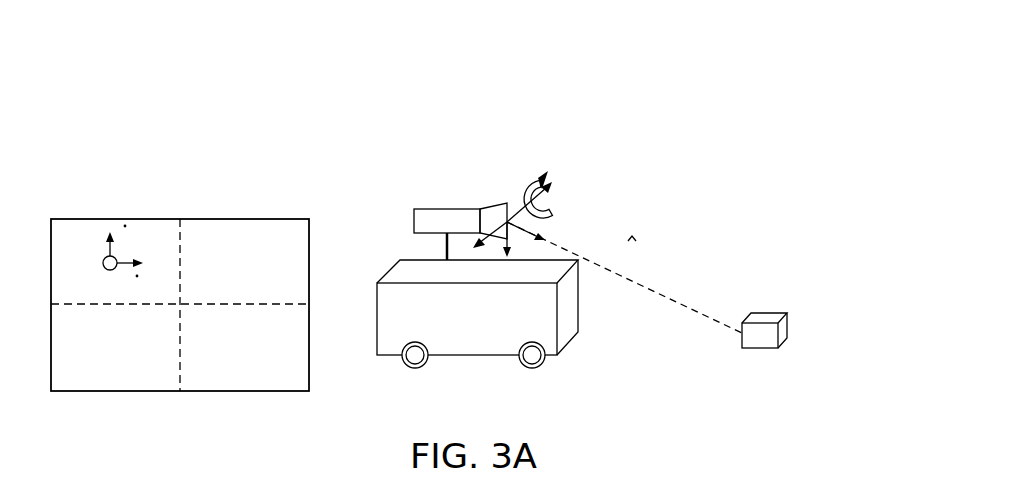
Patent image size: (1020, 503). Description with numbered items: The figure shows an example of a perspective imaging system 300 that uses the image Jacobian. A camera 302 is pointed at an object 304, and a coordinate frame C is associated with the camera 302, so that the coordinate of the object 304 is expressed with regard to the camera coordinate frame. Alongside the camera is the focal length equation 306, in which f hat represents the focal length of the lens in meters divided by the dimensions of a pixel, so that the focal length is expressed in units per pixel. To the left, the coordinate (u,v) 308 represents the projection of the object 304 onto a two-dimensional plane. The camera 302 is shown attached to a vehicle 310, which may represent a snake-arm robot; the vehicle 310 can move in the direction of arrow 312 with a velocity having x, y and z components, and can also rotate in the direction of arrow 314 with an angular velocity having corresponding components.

The perspective imaging system 300 is at (646, 87).
The camera 302 is at (414, 219).
The object 304 is at (796, 326).
The focal length equation 306 is at (688, 240).
The coordinate (u,v) 308 is at (79, 172).
The vehicle 310 is at (388, 357).
The arrow 312 is at (548, 204).
The arrow 314 is at (524, 176).